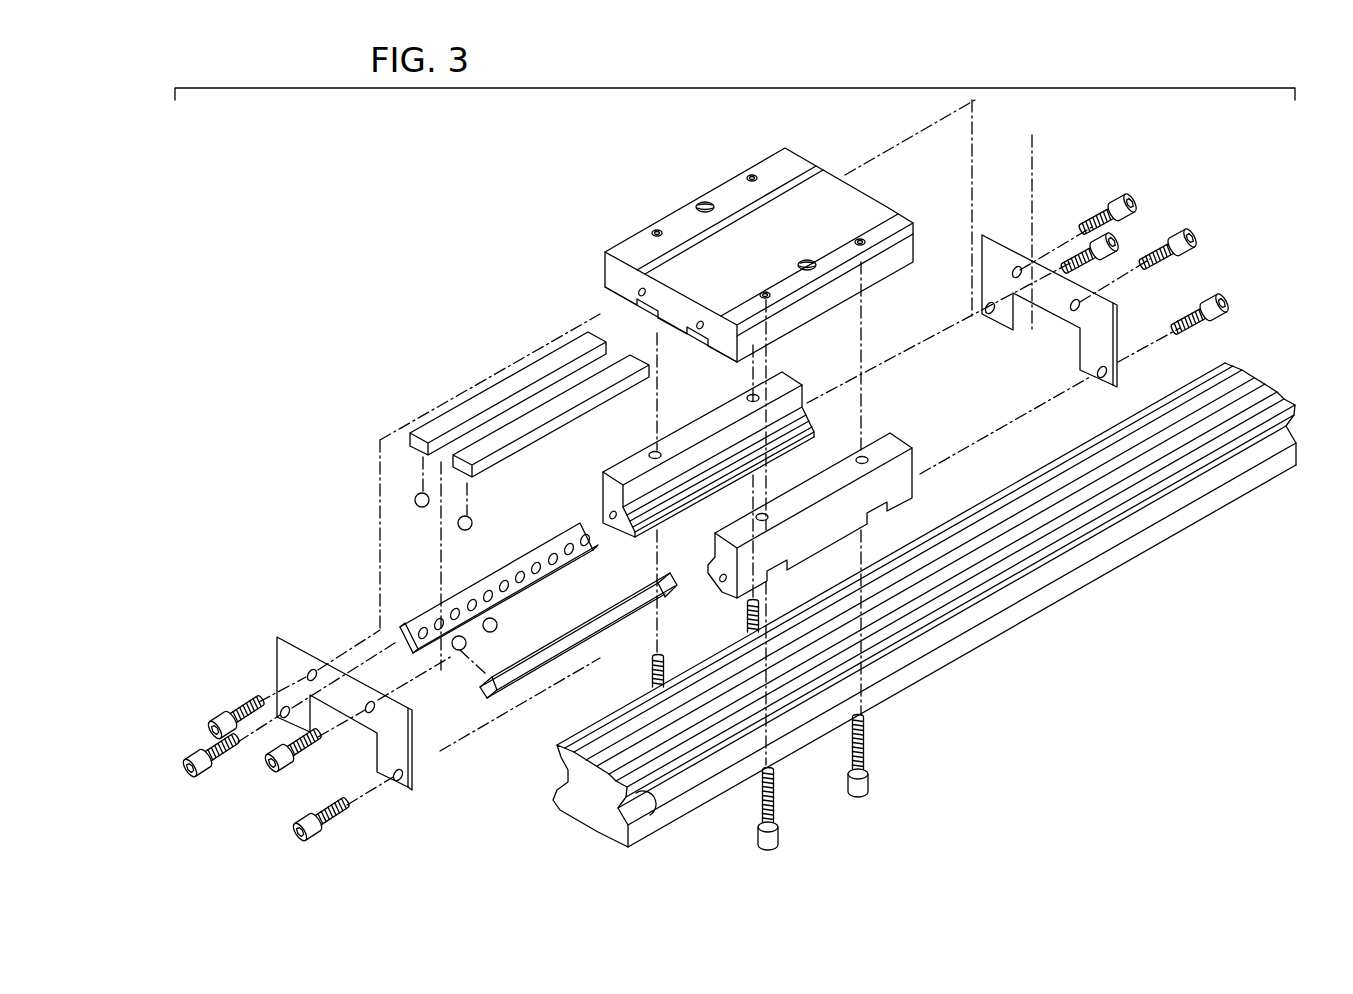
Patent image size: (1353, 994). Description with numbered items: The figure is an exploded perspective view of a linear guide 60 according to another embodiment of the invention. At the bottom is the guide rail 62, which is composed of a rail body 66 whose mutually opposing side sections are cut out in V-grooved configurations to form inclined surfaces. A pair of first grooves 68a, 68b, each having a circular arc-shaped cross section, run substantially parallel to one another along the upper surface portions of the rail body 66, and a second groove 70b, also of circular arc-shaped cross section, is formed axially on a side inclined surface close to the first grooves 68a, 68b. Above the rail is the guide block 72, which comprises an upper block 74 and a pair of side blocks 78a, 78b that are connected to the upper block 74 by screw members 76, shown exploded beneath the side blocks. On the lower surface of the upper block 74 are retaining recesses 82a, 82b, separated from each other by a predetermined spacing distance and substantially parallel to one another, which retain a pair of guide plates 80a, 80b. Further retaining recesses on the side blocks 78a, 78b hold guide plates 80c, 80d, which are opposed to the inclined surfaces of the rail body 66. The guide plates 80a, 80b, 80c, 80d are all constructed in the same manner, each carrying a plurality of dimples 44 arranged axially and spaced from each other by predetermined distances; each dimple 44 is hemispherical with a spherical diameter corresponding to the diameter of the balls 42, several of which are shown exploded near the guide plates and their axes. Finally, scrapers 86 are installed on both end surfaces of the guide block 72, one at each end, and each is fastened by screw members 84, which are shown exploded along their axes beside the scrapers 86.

The ball 42 is at (419, 508).
The dimple 44 is at (423, 630).
The linear guide 60 is at (413, 285).
The guide rail 62 is at (924, 606).
The rail body 66 is at (968, 625).
The first groove 68a is at (608, 727).
The first groove 68b is at (1025, 540).
The second groove 70b is at (667, 818).
The guide block 72 is at (777, 264).
The upper block 74 is at (897, 258).
The screw member 76 is at (870, 782).
The side block 78a is at (629, 460).
The side block 78b is at (810, 493).
The guide plate 80a is at (472, 408).
The guide plate 80b is at (513, 438).
The guide plate 80c is at (580, 570).
The guide plate 80d is at (607, 608).
The retaining recess 82a is at (650, 306).
The retaining recess 82b is at (698, 340).
The screw member 84 is at (220, 722).
The scraper 86 is at (1117, 320).